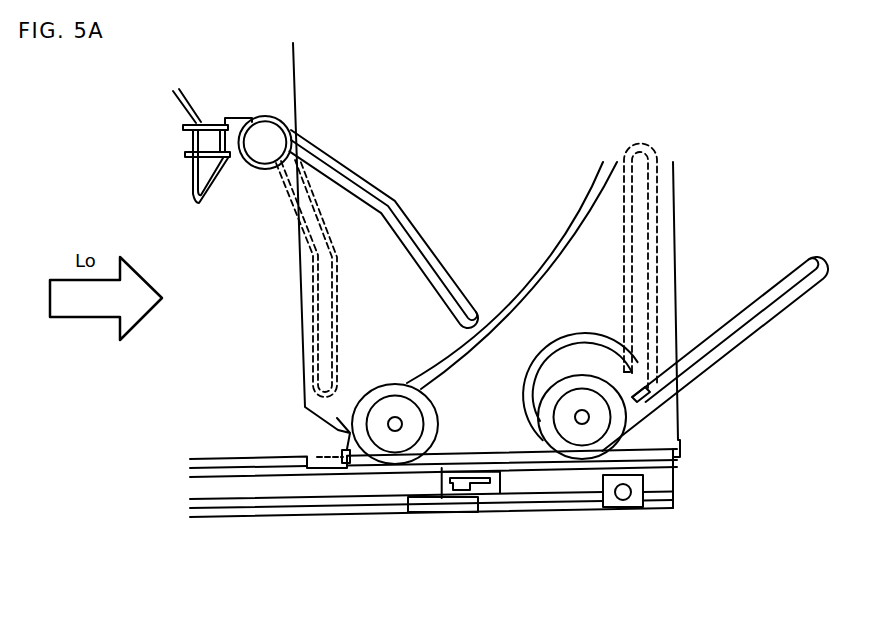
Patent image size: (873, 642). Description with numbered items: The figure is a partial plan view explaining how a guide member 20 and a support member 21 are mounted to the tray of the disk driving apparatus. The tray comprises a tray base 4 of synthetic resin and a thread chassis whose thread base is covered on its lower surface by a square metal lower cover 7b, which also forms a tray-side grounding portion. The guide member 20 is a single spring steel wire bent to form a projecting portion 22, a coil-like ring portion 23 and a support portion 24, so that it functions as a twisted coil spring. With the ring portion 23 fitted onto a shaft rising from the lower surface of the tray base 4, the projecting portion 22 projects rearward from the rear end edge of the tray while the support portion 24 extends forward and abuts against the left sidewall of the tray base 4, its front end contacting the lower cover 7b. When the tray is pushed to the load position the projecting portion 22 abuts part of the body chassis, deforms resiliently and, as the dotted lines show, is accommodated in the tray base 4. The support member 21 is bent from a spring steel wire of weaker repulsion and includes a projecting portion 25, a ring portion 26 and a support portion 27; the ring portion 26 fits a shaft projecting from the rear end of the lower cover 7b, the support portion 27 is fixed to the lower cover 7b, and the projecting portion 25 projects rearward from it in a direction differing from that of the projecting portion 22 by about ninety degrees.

The tray base 4 is at (672, 433).
The lower cover 7b is at (235, 443).
The guide member 20 is at (717, 284).
The support member 21 is at (354, 163).
The projecting portion 22 is at (808, 259).
The ring portion 23 is at (593, 334).
The support portion 24 is at (380, 462).
The projecting portion 25 is at (397, 200).
The ring portion 26 is at (268, 116).
The support portion 27 is at (177, 92).